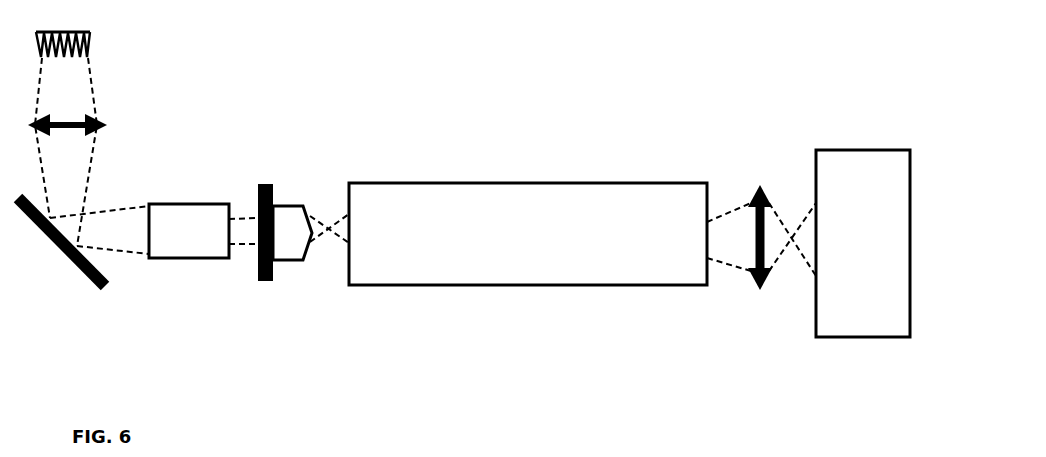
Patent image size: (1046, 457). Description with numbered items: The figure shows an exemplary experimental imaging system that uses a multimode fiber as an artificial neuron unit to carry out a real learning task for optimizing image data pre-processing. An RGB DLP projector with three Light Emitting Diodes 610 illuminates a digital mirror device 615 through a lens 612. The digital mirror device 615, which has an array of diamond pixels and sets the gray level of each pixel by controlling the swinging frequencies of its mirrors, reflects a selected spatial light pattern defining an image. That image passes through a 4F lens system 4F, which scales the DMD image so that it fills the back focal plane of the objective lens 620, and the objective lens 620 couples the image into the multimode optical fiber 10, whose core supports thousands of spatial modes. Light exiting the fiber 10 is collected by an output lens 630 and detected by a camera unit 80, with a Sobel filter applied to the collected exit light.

The Light Emitting Diodes 610 is at (90, 32).
The lens 612 is at (108, 123).
The digital mirror device 615 is at (58, 243).
The 4F lens system 4F is at (172, 253).
The objective lens 620 is at (285, 203).
The multimode optical fiber 10 is at (518, 278).
The output lens 630 is at (758, 288).
The camera unit 80 is at (848, 328).